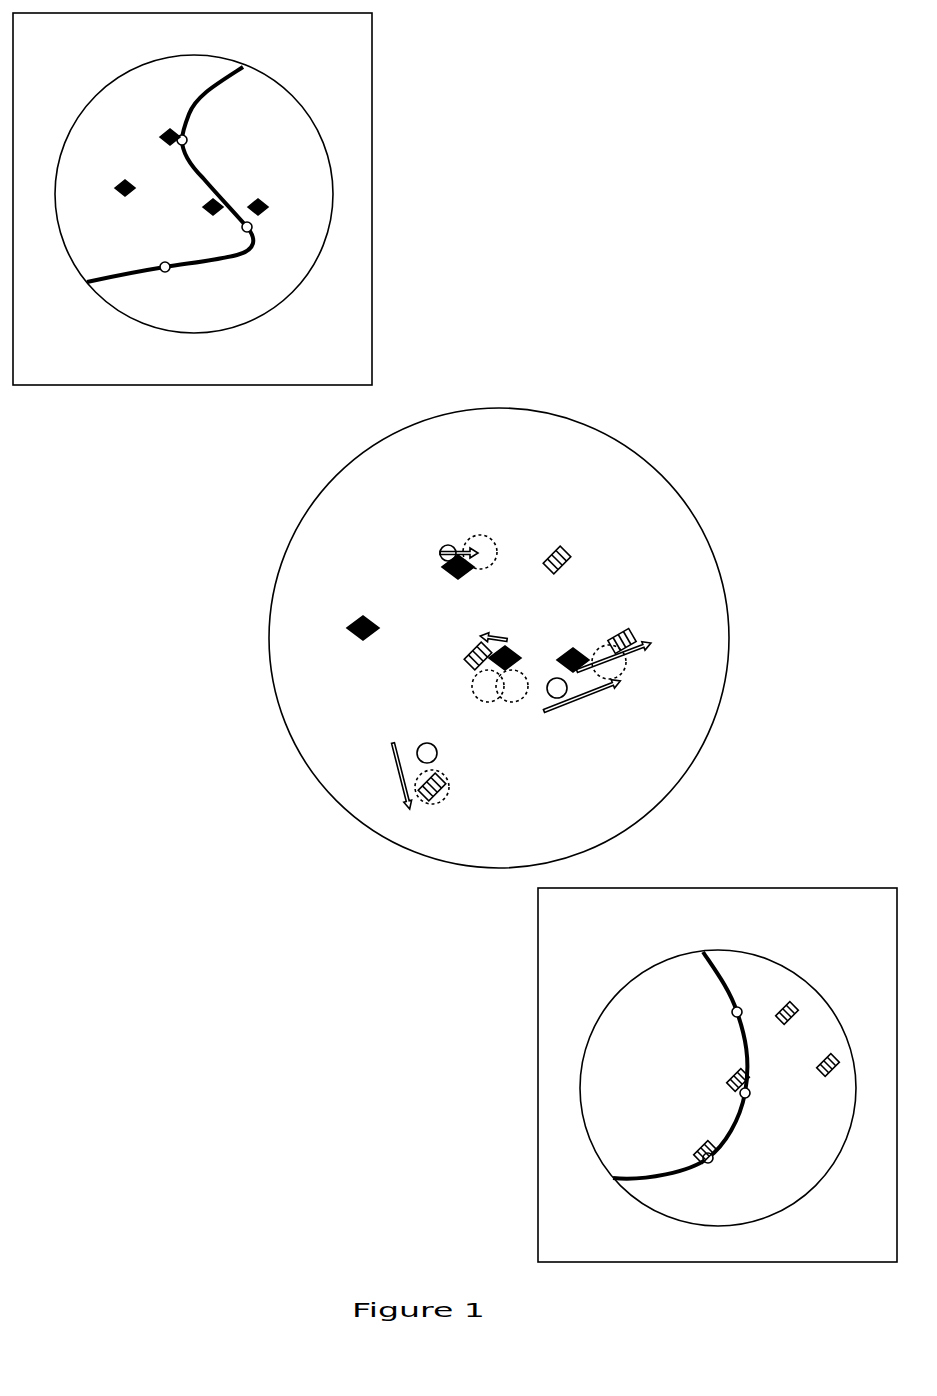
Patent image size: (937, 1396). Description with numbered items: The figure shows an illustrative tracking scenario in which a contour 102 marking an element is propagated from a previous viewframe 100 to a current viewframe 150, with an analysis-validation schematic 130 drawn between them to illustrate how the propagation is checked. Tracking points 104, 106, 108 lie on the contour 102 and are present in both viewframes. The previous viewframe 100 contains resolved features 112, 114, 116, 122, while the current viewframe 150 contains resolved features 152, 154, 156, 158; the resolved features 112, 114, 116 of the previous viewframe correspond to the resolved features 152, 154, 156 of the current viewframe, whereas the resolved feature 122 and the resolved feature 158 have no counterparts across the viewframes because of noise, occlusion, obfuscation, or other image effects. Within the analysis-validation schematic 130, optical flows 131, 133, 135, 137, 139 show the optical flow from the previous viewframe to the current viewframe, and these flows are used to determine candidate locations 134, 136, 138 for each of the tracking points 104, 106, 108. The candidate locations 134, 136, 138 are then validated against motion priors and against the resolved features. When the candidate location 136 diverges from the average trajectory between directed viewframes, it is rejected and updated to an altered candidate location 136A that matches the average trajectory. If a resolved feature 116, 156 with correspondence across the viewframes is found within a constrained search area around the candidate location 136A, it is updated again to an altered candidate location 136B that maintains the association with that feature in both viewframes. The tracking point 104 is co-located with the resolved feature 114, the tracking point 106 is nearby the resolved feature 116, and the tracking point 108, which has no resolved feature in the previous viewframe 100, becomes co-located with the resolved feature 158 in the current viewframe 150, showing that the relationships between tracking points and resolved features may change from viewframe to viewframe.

The previous viewframe 100 is at (363, 41).
The contour 102 is at (196, 176).
The tracking point 104 is at (178, 146).
The tracking point 106 is at (251, 229).
The tracking point 108 is at (120, 180).
The resolved feature 112 is at (262, 200).
The resolved feature 114 is at (166, 130).
The resolved feature 116 is at (209, 213).
The resolved feature 122 is at (358, 617).
The analysis-validation schematic 130 is at (310, 472).
The optical flow 131 is at (630, 658).
The optical flow 133 is at (450, 546).
The candidate location 134 is at (484, 571).
The optical flow 135 is at (580, 703).
The candidate location 136 is at (620, 686).
The altered candidate location 136A is at (505, 703).
The altered candidate location 136B is at (481, 703).
The optical flow 137 is at (499, 632).
The candidate location 138 is at (437, 806).
The optical flow 139 is at (396, 745).
The current viewframe 150 is at (888, 916).
The resolved feature 152 is at (622, 630).
The resolved feature 154 is at (552, 549).
The resolved feature 156 is at (468, 655).
The resolved feature 158 is at (447, 790).